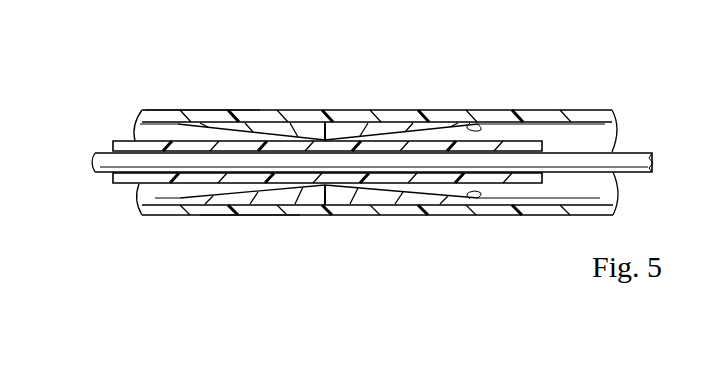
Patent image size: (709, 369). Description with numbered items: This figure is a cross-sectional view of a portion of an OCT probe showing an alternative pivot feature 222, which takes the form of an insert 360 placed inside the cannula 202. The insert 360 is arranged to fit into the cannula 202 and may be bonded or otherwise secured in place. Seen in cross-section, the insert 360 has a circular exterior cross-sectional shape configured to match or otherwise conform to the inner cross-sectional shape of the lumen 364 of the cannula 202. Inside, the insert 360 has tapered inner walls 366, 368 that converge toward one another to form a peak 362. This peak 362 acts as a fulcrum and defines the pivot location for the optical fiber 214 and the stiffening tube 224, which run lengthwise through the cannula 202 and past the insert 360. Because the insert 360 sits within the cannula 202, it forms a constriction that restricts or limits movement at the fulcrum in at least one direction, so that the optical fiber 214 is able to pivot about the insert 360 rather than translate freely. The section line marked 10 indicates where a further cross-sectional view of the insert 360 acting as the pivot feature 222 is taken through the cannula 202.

The section line 10- 10 is at (328, 22).
The cannula 202 is at (584, 109).
The optical fiber 214 is at (637, 175).
The pivot feature 222 is at (255, 213).
The stiffening tube 224 is at (143, 145).
The insert 360 is at (487, 117).
The peak 362 is at (327, 142).
The lumen 364 is at (603, 135).
The tapered inner wall 366 is at (465, 195).
The tapered inner wall 368 is at (235, 194).